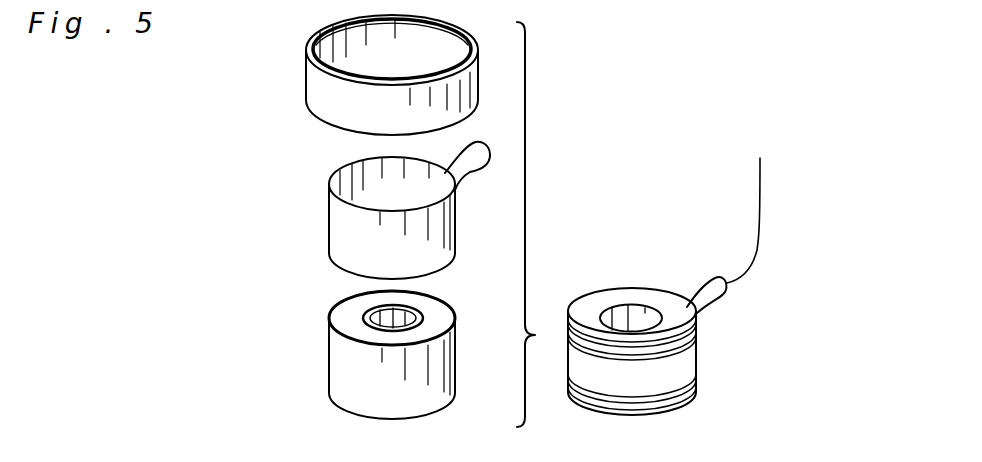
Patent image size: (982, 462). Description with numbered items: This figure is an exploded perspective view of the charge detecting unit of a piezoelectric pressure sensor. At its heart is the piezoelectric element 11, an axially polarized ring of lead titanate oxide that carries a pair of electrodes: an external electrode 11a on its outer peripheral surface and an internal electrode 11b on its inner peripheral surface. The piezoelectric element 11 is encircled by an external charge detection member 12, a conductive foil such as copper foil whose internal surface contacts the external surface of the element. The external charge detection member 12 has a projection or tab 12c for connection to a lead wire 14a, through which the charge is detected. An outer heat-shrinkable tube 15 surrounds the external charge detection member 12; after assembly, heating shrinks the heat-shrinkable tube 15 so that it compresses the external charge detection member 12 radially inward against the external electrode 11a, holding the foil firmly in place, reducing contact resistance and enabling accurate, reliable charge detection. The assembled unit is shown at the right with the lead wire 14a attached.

The heat-shrinkable tube 15 is at (323, 88).
The external charge detection member 12 is at (335, 222).
The tab 12c is at (471, 153).
The piezoelectric element 11 is at (355, 325).
The external electrode 11a is at (345, 316).
The internal electrode 11b is at (372, 305).
The lead wire 14a is at (762, 200).